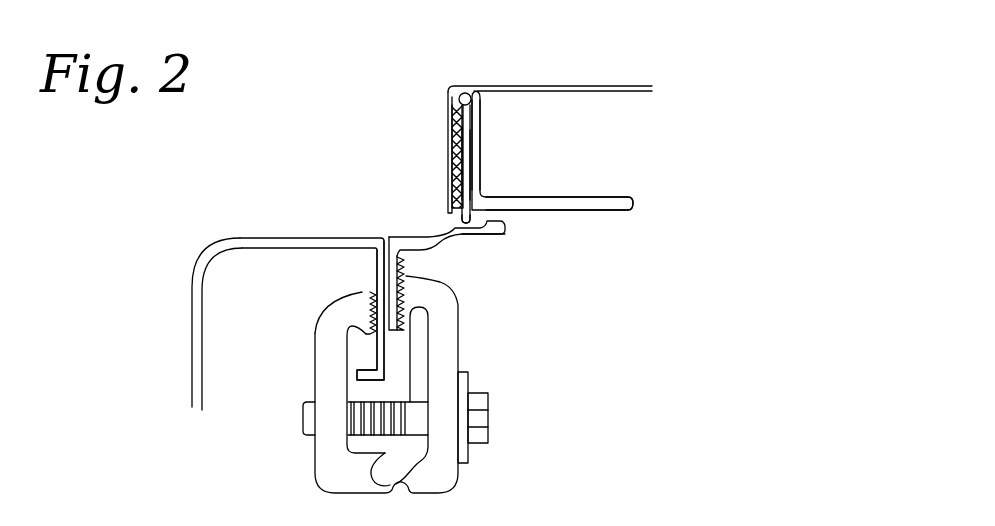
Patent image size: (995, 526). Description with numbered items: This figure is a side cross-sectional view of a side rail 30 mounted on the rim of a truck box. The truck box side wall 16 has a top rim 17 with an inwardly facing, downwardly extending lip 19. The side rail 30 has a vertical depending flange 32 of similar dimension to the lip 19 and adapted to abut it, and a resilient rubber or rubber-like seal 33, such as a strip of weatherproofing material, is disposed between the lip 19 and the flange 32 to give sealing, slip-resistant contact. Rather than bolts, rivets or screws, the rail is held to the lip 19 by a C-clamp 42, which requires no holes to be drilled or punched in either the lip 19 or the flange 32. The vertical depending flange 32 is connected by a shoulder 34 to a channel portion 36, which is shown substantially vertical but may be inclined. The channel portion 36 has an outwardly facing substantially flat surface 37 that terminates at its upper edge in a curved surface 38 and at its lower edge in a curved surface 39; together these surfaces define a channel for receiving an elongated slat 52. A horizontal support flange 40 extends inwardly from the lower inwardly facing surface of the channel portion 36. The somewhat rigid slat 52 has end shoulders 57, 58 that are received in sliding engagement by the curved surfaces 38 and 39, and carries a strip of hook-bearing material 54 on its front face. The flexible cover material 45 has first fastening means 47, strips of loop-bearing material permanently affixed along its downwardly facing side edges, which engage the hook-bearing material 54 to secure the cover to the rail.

The side wall 16 is at (160, 324).
The top rim 17 is at (305, 272).
The downwardly extending lip 19 is at (322, 323).
The side rail 30 is at (495, 248).
The vertical depending flange 32 is at (474, 293).
The resilient seal 33 is at (348, 238).
The shoulder 34 is at (400, 253).
The channel portion 36 is at (540, 135).
The outwardly facing substantially flat surface 37 is at (554, 143).
The curved surface 38 is at (479, 128).
The curved surface 39 is at (507, 247).
The horizontal support flange 40 is at (561, 188).
The C-clamp 42 is at (486, 491).
The flexible cover material 45 is at (550, 63).
The first fastening means 47 is at (401, 156).
The elongated slat 52 is at (549, 165).
The hook-bearing material 54 is at (405, 157).
The end shoulder 57 is at (448, 123).
The end shoulder 58 is at (507, 226).